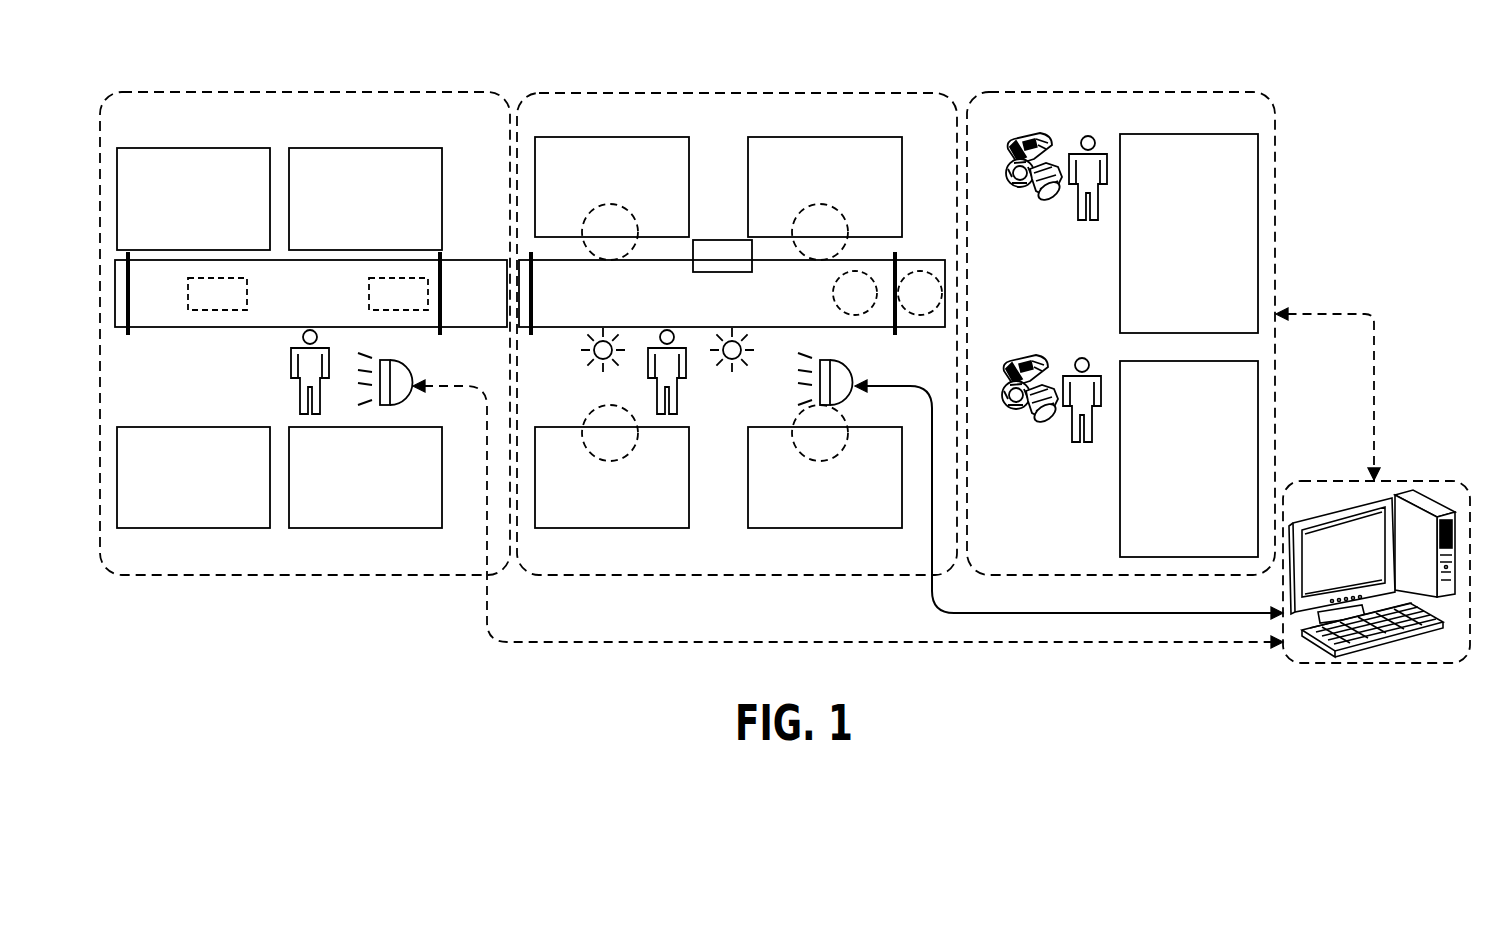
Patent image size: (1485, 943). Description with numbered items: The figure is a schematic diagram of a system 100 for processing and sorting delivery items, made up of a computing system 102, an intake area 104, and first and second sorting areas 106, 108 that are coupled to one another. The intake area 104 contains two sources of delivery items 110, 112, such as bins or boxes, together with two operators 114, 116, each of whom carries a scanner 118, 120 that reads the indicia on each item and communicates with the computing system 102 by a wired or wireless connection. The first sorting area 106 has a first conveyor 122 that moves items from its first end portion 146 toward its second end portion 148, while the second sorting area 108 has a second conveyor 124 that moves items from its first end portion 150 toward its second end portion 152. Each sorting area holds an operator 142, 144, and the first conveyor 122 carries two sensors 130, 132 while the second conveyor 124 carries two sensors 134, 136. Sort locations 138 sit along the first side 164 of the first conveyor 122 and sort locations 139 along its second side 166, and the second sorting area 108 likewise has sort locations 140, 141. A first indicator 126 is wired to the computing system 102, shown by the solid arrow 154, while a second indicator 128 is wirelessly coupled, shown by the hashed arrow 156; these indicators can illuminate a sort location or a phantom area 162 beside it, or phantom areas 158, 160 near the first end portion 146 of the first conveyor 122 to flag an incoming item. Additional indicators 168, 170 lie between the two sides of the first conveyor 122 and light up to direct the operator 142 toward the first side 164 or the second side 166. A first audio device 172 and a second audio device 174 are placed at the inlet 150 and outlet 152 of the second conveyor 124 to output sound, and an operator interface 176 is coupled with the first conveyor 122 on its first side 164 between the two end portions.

The system 100 is at (1336, 103).
The computing system 102 is at (1410, 480).
The intake area 104 is at (1120, 92).
The first sorting area 106 is at (799, 93).
The second sorting area 108 is at (404, 92).
The source of delivery items 110 is at (1173, 233).
The source of delivery items 112 is at (1173, 451).
The operator 114 is at (1088, 134).
The operator 116 is at (1082, 357).
The scanner 118 is at (1030, 134).
The scanner 120 is at (1025, 356).
The first conveyor 122 is at (673, 306).
The second conveyor 124 is at (308, 313).
The first indicator 126 is at (851, 370).
The second indicator 128 is at (413, 374).
The sensor 130 is at (898, 255).
The sensor 132 is at (534, 305).
The sensor 134 is at (443, 308).
The sensor 136 is at (131, 300).
The sort location 138 is at (595, 176).
The sort location 139 is at (595, 500).
The sort location 140 is at (178, 210).
The sort location 141 is at (178, 486).
The operator 142 is at (687, 391).
The operator 144 is at (291, 374).
The first end portion 146 is at (924, 344).
The second end portion 148 is at (541, 344).
The first end portion 150 is at (490, 252).
The second end portion 152 is at (109, 342).
The solid arrow 154 is at (1036, 611).
The hashed arrow 156 is at (777, 641).
The area 158 is at (905, 306).
The area 160 is at (840, 306).
The area 162 is at (595, 233).
The first side 164 is at (700, 123).
The second side 166 is at (700, 566).
The first additional indicator 168 is at (733, 328).
The second additional indicator 170 is at (603, 328).
The first audio device 172 is at (383, 306).
The second audio device 174 is at (202, 306).
The operator interface 176 is at (707, 263).